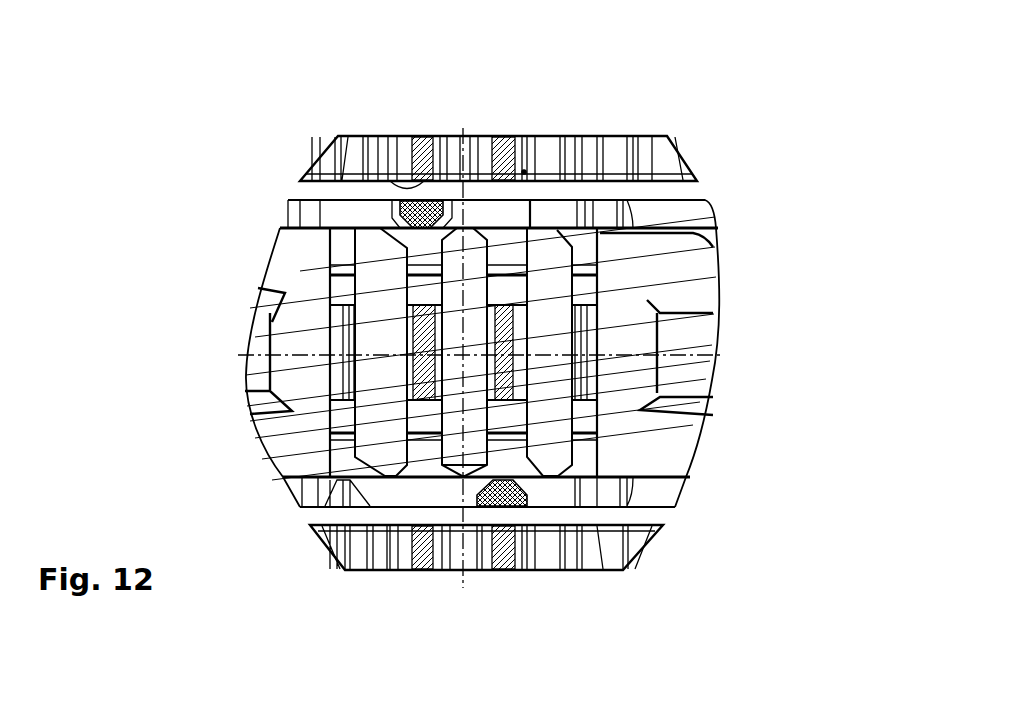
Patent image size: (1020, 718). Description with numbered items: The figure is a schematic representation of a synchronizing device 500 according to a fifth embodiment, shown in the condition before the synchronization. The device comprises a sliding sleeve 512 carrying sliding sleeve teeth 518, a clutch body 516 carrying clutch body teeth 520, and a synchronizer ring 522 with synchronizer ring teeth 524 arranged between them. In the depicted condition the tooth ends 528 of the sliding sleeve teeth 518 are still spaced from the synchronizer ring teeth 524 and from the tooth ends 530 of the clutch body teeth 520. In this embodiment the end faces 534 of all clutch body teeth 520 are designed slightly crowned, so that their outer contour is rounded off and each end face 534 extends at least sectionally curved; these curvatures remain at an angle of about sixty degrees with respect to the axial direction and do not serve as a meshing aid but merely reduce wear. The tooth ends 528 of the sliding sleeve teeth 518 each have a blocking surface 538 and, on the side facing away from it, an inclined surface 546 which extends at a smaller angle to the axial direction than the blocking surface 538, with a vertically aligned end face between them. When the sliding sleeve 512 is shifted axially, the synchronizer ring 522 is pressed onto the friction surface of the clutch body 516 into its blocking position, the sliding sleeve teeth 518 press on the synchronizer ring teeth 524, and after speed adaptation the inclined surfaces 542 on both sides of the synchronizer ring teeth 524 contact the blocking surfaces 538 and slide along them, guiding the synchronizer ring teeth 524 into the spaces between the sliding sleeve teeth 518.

The synchronizing device 500 is at (158, 54).
The sliding sleeve 512 is at (745, 316).
The clutch body 516 is at (740, 164).
The sliding sleeve teeth 518 is at (383, 280).
The clutch body teeth 520 is at (447, 205).
The synchronizer ring 522 is at (752, 221).
The synchronizer ring teeth 524 is at (392, 181).
The tooth ends 528 is at (370, 252).
The tooth ends 530 is at (530, 176).
The end faces 534 is at (385, 181).
The blocking surface 538 is at (395, 205).
The inclined surfaces 542 is at (452, 223).
The inclined surface 546 is at (344, 252).